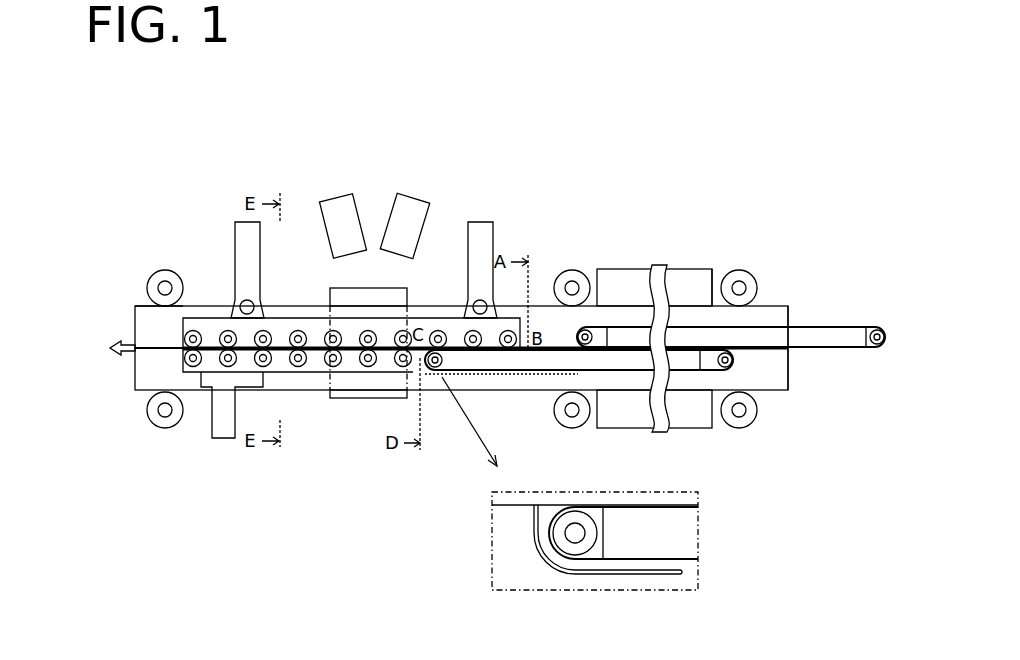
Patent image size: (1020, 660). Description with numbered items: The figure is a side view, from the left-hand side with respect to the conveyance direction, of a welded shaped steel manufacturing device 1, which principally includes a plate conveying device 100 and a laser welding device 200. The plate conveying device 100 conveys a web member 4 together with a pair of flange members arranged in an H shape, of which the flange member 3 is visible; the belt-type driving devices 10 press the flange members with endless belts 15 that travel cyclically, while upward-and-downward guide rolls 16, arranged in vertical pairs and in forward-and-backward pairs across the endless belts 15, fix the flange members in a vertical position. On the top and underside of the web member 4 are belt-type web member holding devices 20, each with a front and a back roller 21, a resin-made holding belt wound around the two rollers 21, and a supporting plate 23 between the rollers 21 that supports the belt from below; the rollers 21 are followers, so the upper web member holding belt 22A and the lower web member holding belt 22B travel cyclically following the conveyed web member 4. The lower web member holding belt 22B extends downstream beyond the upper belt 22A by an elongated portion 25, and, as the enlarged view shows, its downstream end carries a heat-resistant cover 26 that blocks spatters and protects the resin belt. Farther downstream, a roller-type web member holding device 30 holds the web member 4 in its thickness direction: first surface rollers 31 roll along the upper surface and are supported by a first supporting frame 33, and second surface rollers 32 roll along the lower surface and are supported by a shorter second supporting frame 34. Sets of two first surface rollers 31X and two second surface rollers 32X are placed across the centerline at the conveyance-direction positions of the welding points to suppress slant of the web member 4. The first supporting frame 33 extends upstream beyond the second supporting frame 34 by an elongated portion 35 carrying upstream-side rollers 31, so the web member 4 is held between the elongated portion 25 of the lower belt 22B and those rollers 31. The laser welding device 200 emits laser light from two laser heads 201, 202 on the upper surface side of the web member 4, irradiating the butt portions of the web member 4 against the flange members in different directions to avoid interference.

The welded shaped steel manufacturing device 1 is at (497, 137).
The flange member 3 is at (136, 306).
The web member 4 is at (158, 352).
The belt-type driving device 10 is at (628, 266).
The endless belt 15 is at (687, 272).
The guide roll 16 is at (158, 272).
The belt-type web member holding device 20 is at (656, 313).
The roller 21 is at (580, 333).
The upper web member holding belt 22A is at (845, 325).
The lower web member holding belt 22B is at (622, 372).
The supporting plate 23 is at (795, 328).
The elongated portion 25 is at (487, 376).
The cover 26 is at (510, 506).
The roller-type web member holding device 30 is at (351, 346).
The first surface roller 31 is at (195, 330).
The second surface roller 32 is at (194, 367).
The set of two first surface rollers 31X is at (368, 330).
The set of two second surface rollers 32X is at (368, 367).
The first supporting frame 33 is at (306, 326).
The second supporting frame 34 is at (283, 373).
The elongated portion 35 is at (440, 318).
The plate conveying device 100 is at (643, 239).
The laser welding device 200 is at (377, 191).
The laser head 201 is at (412, 205).
The laser head 202 is at (339, 205).